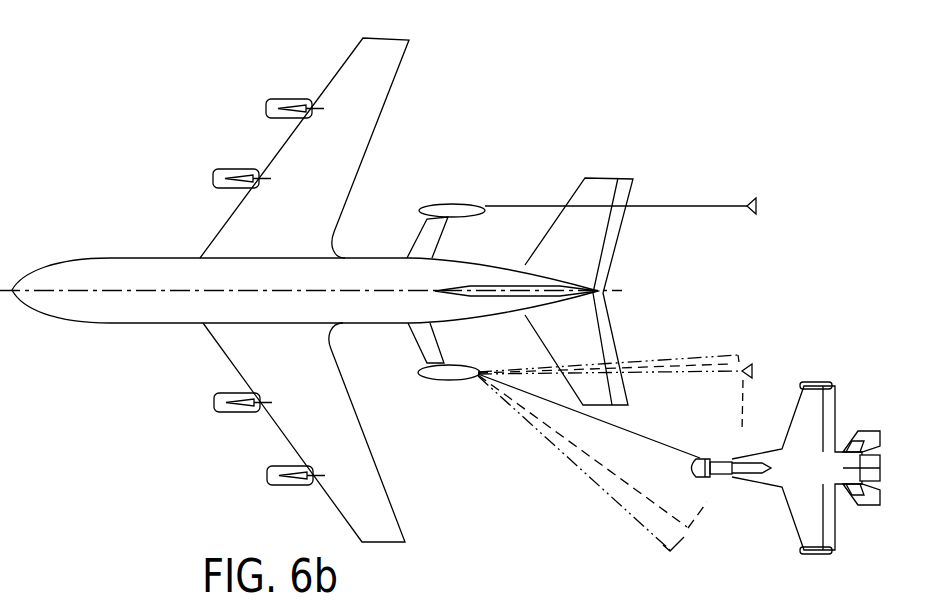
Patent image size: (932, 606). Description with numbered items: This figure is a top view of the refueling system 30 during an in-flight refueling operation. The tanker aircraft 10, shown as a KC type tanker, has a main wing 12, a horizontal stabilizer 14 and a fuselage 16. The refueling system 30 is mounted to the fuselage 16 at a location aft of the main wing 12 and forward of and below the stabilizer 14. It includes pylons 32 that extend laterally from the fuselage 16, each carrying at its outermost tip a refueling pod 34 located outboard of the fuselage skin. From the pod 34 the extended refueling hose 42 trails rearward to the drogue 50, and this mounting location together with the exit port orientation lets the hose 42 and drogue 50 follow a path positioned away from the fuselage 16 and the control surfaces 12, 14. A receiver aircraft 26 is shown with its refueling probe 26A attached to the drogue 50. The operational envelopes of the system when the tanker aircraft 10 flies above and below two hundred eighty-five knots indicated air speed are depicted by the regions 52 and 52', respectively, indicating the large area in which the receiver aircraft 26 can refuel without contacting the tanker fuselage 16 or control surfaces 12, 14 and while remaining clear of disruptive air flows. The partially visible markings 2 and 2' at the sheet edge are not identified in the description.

The tanker aircraft 10 is at (161, 161).
The main wing 12 is at (227, 350).
The stabilizer 14 is at (598, 190).
The fuselage 16 is at (115, 259).
The refueling system 30 is at (465, 170).
The pylon 32 is at (422, 238).
The refueling pod 34 is at (428, 205).
The refueling hose 42 is at (680, 205).
The drogue 50 is at (756, 205).
The operational envelope 52 is at (592, 451).
The operational envelope 52' is at (581, 463).
The receiver aircraft 26 is at (813, 420).
The refueling probe 26A is at (733, 458).
The reference (cut off at sheet edge) 2 is at (6, 492).
The reference (cut off at sheet edge) 2' is at (9, 525).